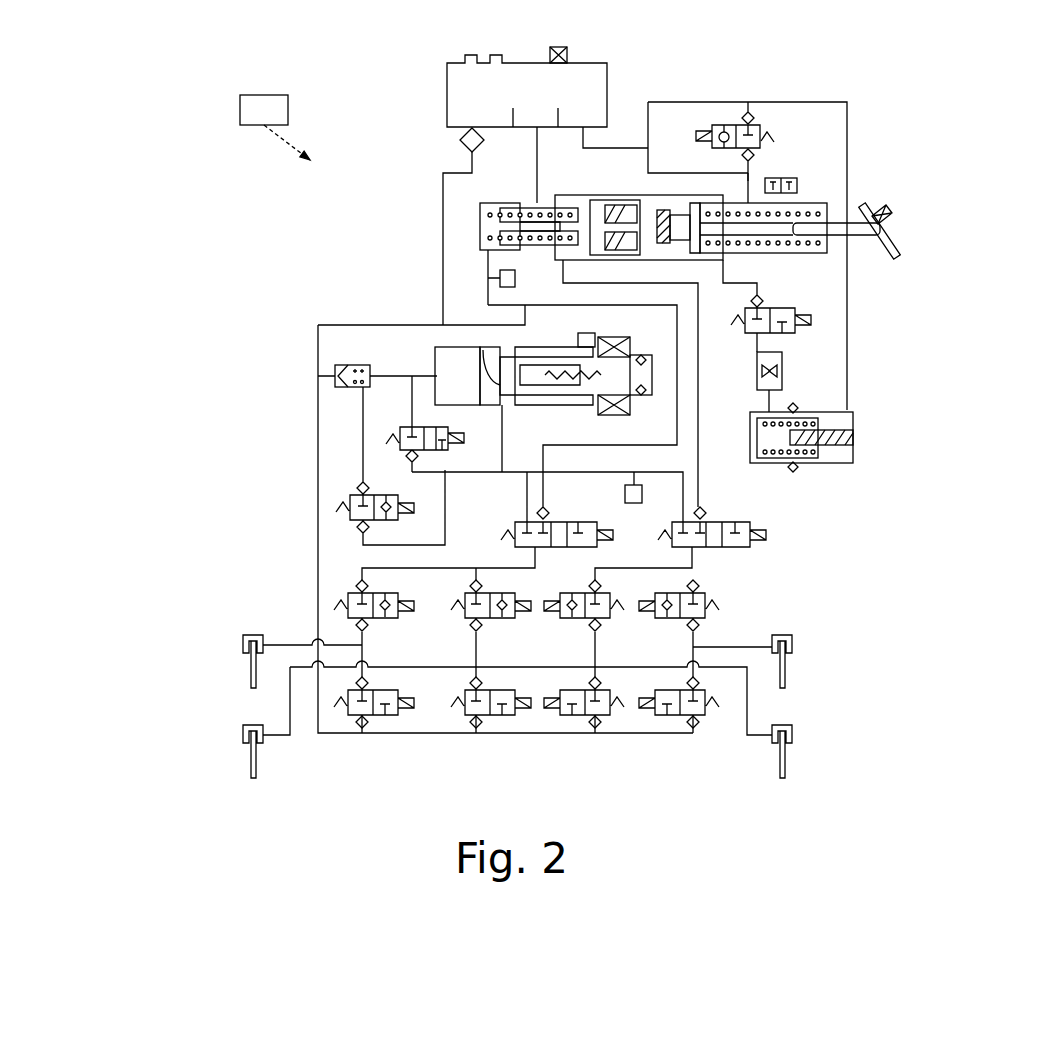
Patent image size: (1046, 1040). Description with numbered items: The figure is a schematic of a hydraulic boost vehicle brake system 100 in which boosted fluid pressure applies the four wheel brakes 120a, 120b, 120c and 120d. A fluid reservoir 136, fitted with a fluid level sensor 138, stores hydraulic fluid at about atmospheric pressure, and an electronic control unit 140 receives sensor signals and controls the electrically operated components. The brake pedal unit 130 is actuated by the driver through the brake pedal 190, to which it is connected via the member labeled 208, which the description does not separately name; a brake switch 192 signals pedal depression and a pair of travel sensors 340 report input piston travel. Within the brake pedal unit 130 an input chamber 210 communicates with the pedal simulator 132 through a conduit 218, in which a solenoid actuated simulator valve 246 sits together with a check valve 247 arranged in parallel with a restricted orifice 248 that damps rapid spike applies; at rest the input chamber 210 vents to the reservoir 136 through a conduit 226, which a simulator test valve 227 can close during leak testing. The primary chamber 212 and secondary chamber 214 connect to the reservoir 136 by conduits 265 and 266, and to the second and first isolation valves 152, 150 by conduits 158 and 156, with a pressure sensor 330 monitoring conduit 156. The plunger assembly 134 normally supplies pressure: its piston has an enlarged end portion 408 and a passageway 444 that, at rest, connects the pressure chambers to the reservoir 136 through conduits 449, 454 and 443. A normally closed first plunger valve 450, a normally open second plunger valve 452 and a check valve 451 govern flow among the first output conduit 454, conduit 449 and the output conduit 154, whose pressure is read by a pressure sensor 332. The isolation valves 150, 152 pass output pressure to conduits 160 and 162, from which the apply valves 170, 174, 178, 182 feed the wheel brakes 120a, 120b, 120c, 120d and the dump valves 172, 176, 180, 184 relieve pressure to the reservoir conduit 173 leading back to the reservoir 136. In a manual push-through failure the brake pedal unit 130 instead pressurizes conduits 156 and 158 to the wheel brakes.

The brake system 100 is at (122, 135).
The electronic control unit 140 is at (263, 95).
The fluid reservoir 136 is at (462, 87).
The fluid level sensor 138 is at (570, 50).
The conduit 265 is at (658, 170).
The simulator test valve 227 is at (718, 125).
The brake pedal unit 130 is at (777, 153).
The conduit 226 is at (750, 180).
The travel sensors 340 is at (800, 177).
The brake sensor or switch 192 is at (892, 203).
The brake pedal 190 is at (890, 235).
The secondary chamber 214 is at (480, 202).
The conduit 266 is at (536, 178).
The primary chamber 212 is at (633, 198).
The input chamber 210 is at (723, 203).
The conduit 449 is at (442, 228).
The pressure sensor 330 is at (500, 277).
The plunger assembly 134 is at (485, 374).
The conduit 218 is at (727, 270).
The input rod 208 is at (855, 236).
The first output conduit 454 is at (420, 372).
The passageway 444 is at (500, 380).
The check valve 451 is at (350, 363).
The first plunger valve 450 is at (392, 428).
The enlarged end portion 408 is at (523, 377).
The conduit 443 is at (500, 423).
The restricted orifice 248 is at (757, 372).
The simulator valve 246 is at (795, 332).
The check valve 247 is at (782, 370).
The second plunger valve 452 is at (350, 500).
The first isolation valve 150 is at (516, 518).
The output conduit 154 is at (562, 473).
The pressure sensor 332 is at (642, 495).
The conduit 158 is at (700, 415).
The conduit 156 is at (678, 433).
The reservoir conduit 173 is at (318, 548).
The conduit 160 is at (515, 568).
The conduit 162 is at (660, 567).
The second isolation valve 152 is at (750, 543).
The first apply valve 170 is at (348, 598).
The fourth apply valve 182 is at (703, 593).
The wheel brake 120a is at (243, 640).
The second apply valve 174 is at (465, 613).
The third apply valve 178 is at (580, 617).
The wheel brake 120d is at (792, 637).
The wheel brake 120b is at (243, 728).
The first dump valve 172 is at (358, 717).
The second dump valve 176 is at (468, 717).
The third dump valve 180 is at (580, 717).
The fourth dump valve 184 is at (687, 717).
The wheel brake 120c is at (792, 728).
The pedal simulator 132 is at (853, 465).